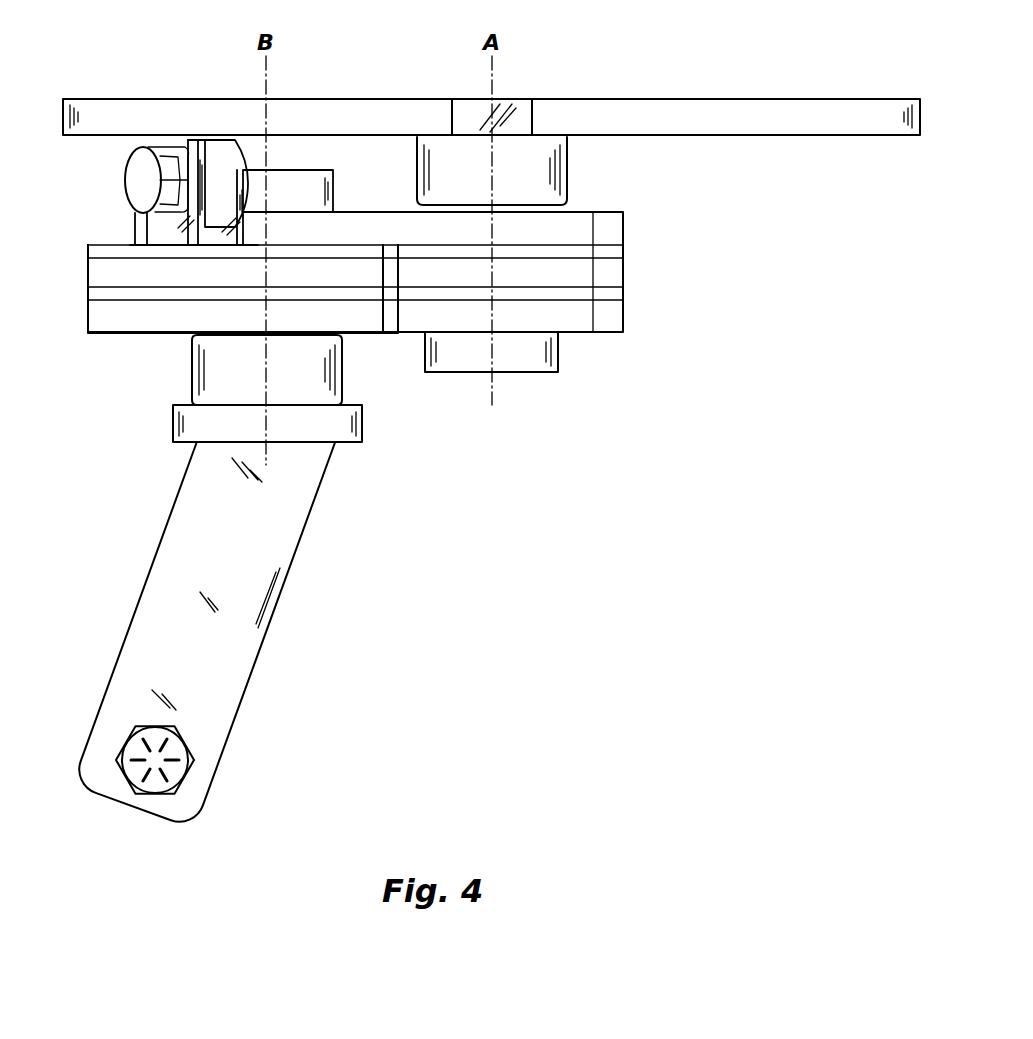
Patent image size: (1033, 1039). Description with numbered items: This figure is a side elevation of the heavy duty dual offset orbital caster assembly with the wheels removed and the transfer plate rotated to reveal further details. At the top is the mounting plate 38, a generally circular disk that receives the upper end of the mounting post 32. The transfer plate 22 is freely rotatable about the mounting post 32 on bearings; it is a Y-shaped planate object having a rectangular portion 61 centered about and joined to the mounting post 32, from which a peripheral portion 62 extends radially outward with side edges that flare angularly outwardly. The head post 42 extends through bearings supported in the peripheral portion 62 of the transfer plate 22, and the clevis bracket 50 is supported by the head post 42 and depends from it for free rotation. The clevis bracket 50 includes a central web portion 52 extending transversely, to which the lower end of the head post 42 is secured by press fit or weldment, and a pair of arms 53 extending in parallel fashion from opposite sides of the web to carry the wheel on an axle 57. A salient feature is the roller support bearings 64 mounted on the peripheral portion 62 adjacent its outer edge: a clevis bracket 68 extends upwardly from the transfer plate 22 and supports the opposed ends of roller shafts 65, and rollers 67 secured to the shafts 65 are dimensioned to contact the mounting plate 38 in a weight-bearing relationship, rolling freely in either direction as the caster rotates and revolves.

The transfer plate 22 is at (637, 242).
The mounting post 32 is at (520, 365).
The mounting plate 38 is at (703, 135).
The head post 42 is at (220, 367).
The clevis bracket 50 is at (388, 435).
The central web portion 52 is at (170, 427).
The arms 53 is at (255, 513).
The axle 57 is at (180, 750).
The rectangular portion 61 is at (558, 272).
The peripheral portion 62 is at (118, 323).
The roller support bearings 64 is at (100, 200).
The roller shafts 65 is at (145, 180).
The rollers 67 is at (217, 153).
The clevis bracket 68 is at (160, 228).